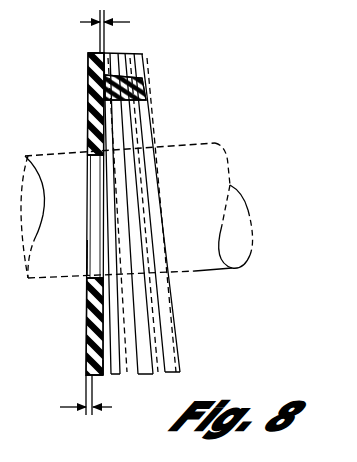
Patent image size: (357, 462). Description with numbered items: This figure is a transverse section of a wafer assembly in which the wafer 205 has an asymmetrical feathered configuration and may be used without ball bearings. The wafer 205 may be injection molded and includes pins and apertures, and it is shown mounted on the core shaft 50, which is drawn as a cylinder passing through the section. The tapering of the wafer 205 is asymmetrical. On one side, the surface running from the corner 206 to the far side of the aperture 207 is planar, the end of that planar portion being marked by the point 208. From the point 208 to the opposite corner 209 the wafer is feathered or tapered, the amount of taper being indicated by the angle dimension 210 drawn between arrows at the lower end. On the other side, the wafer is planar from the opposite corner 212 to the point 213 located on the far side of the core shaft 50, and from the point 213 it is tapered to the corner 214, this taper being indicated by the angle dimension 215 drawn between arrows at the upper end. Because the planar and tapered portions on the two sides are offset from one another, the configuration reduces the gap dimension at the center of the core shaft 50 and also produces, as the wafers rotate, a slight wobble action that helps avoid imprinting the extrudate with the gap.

The core shaft 50 is at (172, 152).
The wafer 205 is at (82, 308).
The corner 206 is at (90, 50).
The aperture 207 is at (87, 256).
The point 208 is at (87, 279).
The opposite corner 209 is at (87, 379).
The angle dimension 210 is at (86, 414).
The opposite corner 212 is at (103, 376).
The point 213 is at (103, 154).
The corner 214 is at (99, 50).
The angle dimension 215 is at (104, 12).